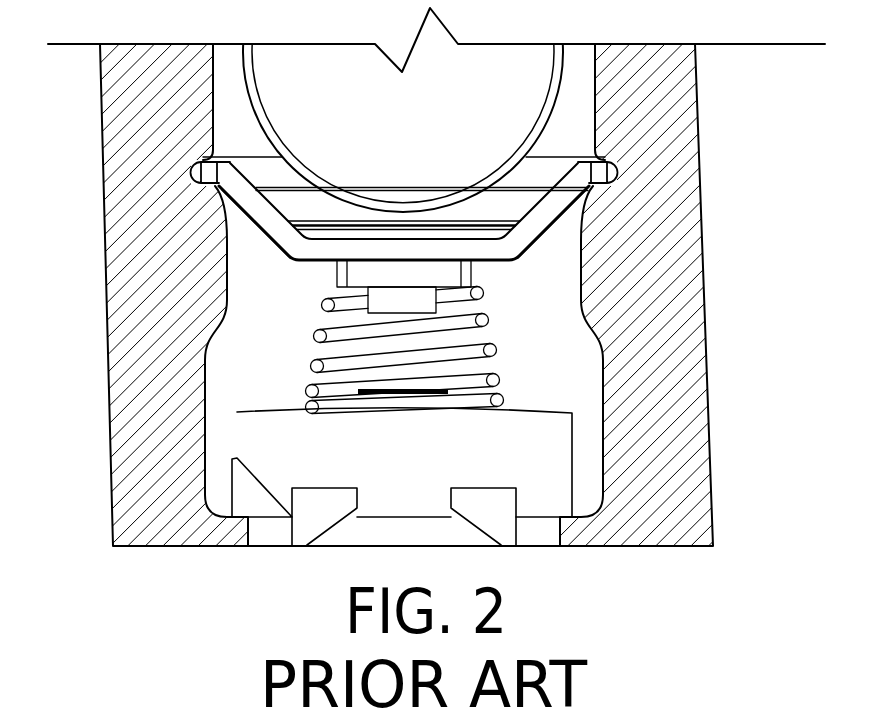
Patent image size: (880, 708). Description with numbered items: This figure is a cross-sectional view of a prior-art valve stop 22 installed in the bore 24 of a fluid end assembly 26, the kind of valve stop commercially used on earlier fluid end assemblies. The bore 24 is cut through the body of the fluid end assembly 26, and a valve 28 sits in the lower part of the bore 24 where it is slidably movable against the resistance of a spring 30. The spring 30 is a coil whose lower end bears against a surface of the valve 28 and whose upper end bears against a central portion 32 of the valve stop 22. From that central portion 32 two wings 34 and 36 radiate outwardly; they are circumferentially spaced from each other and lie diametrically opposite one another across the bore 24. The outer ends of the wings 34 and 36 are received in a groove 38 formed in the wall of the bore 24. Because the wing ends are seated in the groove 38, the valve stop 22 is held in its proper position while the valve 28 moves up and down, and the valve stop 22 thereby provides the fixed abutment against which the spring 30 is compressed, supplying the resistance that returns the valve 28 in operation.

The valve stop 22 is at (618, 165).
The bore 24 is at (547, 309).
The fluid end assembly 26 is at (665, 412).
The valve 28 is at (557, 443).
The spring 30 is at (500, 382).
The central portion 32 is at (510, 243).
The wing 34 is at (567, 212).
The wing 36 is at (258, 224).
The groove 38 is at (608, 183).